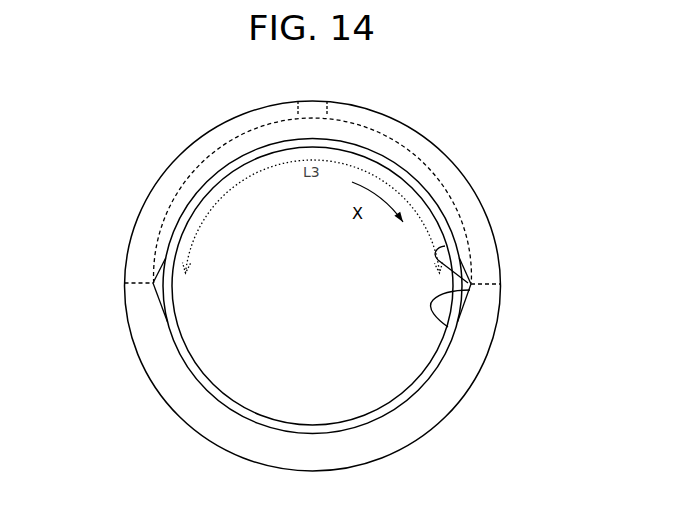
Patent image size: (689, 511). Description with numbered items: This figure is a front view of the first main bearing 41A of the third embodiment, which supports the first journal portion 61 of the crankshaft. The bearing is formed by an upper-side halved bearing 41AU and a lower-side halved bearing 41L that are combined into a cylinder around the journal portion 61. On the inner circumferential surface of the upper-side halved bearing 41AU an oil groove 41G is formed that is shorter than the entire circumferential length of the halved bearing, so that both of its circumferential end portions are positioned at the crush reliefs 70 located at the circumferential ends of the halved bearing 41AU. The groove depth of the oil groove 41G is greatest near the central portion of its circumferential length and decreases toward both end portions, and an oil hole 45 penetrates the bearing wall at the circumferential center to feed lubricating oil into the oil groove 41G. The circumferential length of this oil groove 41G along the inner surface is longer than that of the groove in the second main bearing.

The first main bearing 41A is at (160, 172).
The upper-side halved bearing 41AU is at (140, 217).
The lower-side halved bearing 41L is at (140, 332).
The oil groove 41G is at (233, 152).
The oil hole 45 is at (322, 102).
The crush relief 70 is at (445, 246).
The first journal portion 61 is at (393, 362).